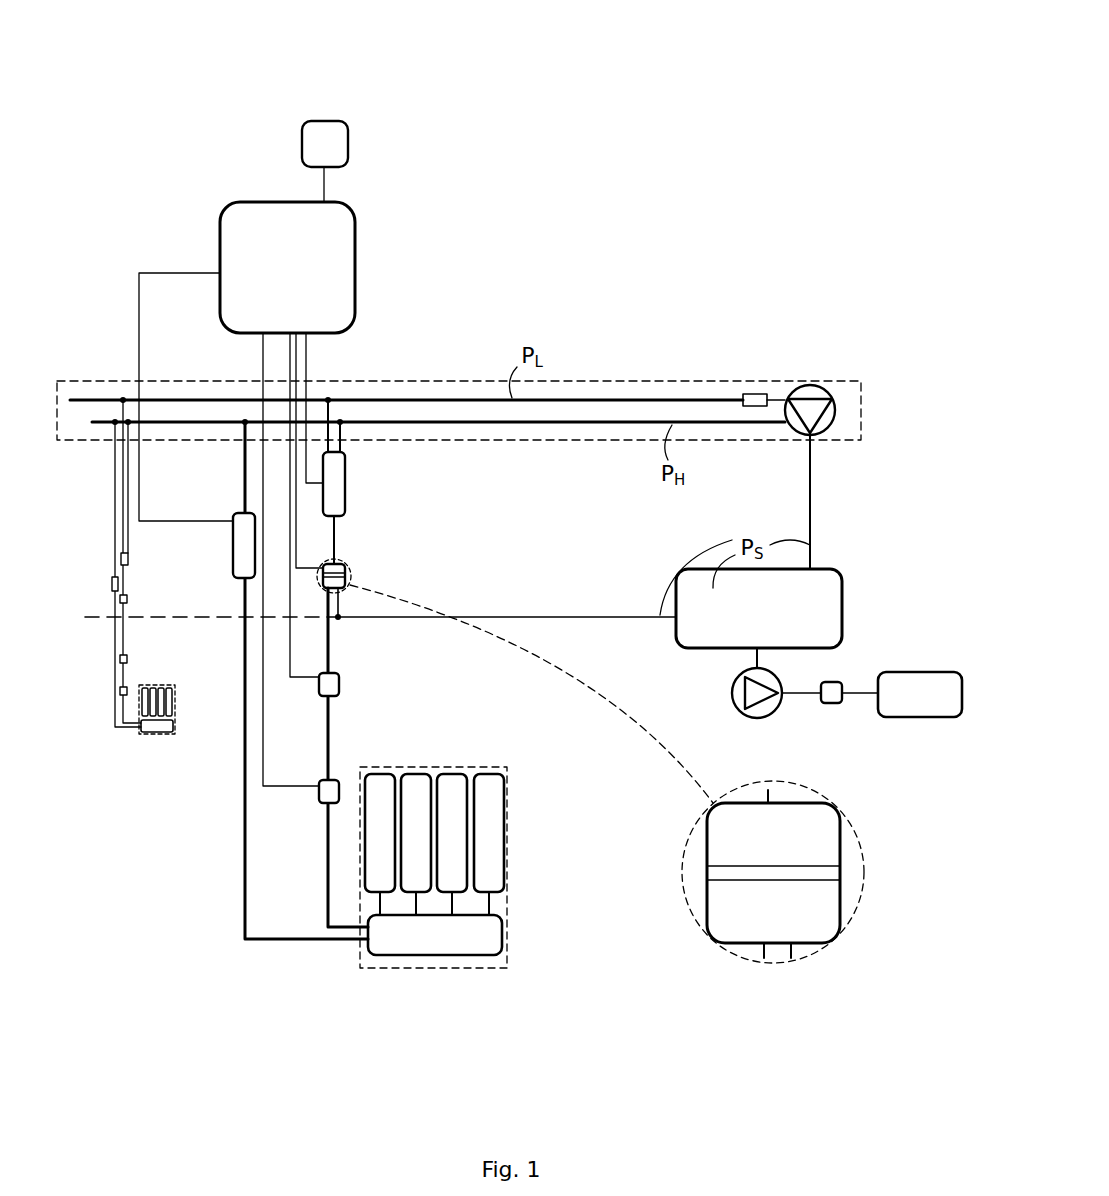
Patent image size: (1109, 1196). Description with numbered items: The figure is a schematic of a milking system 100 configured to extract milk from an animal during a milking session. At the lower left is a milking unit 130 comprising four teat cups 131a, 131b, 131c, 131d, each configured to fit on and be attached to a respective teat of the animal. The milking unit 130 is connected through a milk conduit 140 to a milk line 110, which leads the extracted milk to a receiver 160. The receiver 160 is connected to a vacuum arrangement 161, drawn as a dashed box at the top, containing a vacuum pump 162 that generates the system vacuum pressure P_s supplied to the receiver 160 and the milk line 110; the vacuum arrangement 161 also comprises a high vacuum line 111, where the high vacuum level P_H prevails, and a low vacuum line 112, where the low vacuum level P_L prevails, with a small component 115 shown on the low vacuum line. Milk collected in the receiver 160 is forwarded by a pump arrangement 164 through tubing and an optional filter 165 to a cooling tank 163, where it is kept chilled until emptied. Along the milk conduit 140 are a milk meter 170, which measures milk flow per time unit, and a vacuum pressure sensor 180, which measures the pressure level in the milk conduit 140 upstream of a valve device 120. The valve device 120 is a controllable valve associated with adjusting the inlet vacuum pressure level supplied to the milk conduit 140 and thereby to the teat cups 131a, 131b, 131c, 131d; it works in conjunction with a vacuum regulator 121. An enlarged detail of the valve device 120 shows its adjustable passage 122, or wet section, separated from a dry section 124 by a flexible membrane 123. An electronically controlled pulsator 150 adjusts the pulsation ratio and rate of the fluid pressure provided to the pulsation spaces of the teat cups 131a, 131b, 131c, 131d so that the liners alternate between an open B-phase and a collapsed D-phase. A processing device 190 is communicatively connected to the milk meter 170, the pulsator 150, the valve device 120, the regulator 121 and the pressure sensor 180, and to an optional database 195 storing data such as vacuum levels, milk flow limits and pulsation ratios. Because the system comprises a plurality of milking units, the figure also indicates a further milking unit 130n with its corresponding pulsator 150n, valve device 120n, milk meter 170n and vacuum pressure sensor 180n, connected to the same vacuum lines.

The milking system 100 is at (878, 84).
The milk line 110 is at (553, 615).
The high vacuum line 111 is at (730, 425).
The low vacuum line 112 is at (566, 398).
The filter 115 is at (748, 392).
The valve device 120 is at (346, 575).
The regulator 121 is at (338, 465).
The adjustable passage 122 is at (832, 912).
The flexible membrane 123 is at (835, 872).
The dry section 124 is at (828, 838).
The milking unit 130 is at (464, 834).
The teat cup 131a is at (378, 784).
The teat cup 131b is at (414, 784).
The teat cup 131c is at (455, 784).
The teat cup 131d is at (493, 784).
The milk conduit 140 is at (326, 738).
The electronically controlled pulsator 150 is at (232, 550).
The receiver 160 is at (759, 608).
The vacuum arrangement 161 is at (862, 406).
The vacuum pump 162 is at (809, 384).
The cooling tank 163 is at (920, 694).
The pump arrangement 164 is at (740, 675).
The filter 165 is at (838, 682).
The milk meter 170 is at (318, 683).
The vacuum pressure sensor 180 is at (318, 798).
The processing device 190 is at (247, 494).
The database 195 is at (328, 141).
The control valve of further consumer 150n is at (110, 582).
The selector valve of further consumer 120n is at (128, 600).
The valve of further consumer 170n is at (118, 659).
The valve of further consumer 180n is at (118, 691).
The further hydraulic consumer unit 130n is at (148, 735).